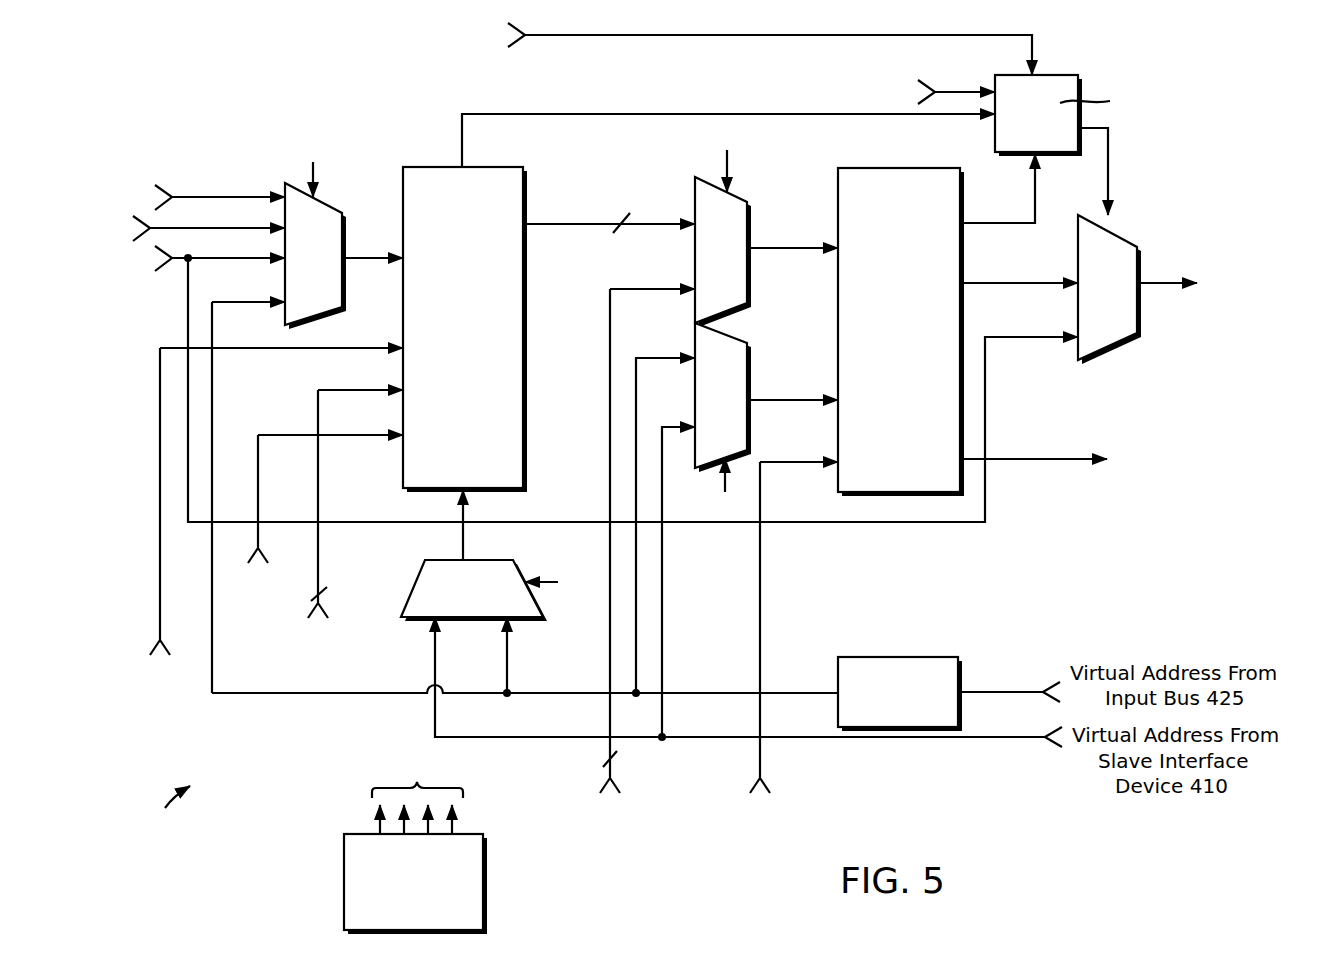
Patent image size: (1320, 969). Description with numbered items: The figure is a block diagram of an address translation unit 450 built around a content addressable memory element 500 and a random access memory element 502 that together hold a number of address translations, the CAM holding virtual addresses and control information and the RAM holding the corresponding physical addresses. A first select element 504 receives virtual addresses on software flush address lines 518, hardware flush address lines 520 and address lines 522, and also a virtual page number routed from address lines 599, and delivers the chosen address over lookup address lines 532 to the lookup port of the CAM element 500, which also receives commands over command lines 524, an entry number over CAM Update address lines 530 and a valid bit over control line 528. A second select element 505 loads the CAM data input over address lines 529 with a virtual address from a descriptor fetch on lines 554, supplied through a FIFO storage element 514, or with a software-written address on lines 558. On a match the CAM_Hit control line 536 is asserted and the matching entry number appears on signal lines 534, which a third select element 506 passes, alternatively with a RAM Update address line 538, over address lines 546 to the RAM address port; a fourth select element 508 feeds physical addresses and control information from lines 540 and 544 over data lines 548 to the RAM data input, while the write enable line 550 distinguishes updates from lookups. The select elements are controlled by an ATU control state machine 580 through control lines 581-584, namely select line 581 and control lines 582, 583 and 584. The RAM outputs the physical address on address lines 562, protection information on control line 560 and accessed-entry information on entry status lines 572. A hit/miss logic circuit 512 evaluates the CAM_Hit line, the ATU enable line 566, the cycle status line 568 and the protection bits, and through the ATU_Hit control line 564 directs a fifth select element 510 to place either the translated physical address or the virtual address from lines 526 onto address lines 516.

The address translation unit 450 is at (151, 806).
The content addressable memory element 500 is at (465, 329).
The random access memory element 502 is at (901, 332).
The first select element 504 is at (315, 256).
The second select element 505 is at (474, 590).
The third select element 506 is at (723, 252).
The fourth select element 508 is at (723, 397).
The fifth select element 510 is at (1109, 289).
The hit/miss logic circuit 512 is at (1072, 73).
The FIFO storage element 514 is at (900, 694).
The address lines 516 is at (1165, 282).
The software flush address lines 518 is at (197, 197).
The hardware flush address lines 520 is at (186, 228).
The address lines 522 is at (196, 258).
The command lines 524 is at (160, 547).
The virtual address lines 526 is at (188, 322).
The control line 528 is at (283, 457).
The address lines 529 is at (466, 543).
The CAM Update address lines 530 is at (320, 547).
The lookup address lines 532 is at (372, 256).
The signal lines 534 is at (572, 221).
The CAM_Hit control line 536 is at (640, 113).
The RAM Update address line 538 is at (620, 767).
The lines 540 is at (636, 698).
The lines 544 is at (664, 735).
The address lines 546 is at (776, 247).
The data lines 548 is at (776, 398).
The write enable line 550 is at (765, 773).
The lines 554 is at (509, 643).
The lines 558 is at (437, 722).
The control line 560 is at (972, 221).
The address lines 562 is at (992, 285).
The ATU_Hit control line 564 is at (1110, 182).
The ATU enable line 566 is at (930, 92).
The cycle status line 568 is at (747, 49).
The entry status lines 572 is at (1057, 460).
The ATU control state machine 580 is at (417, 884).
The select line 581 is at (318, 168).
The control line 582 is at (564, 582).
The control line 583 is at (729, 161).
The control line 584 is at (729, 488).
The control lines 581-584 is at (420, 794).
The address lines 599 is at (212, 388).